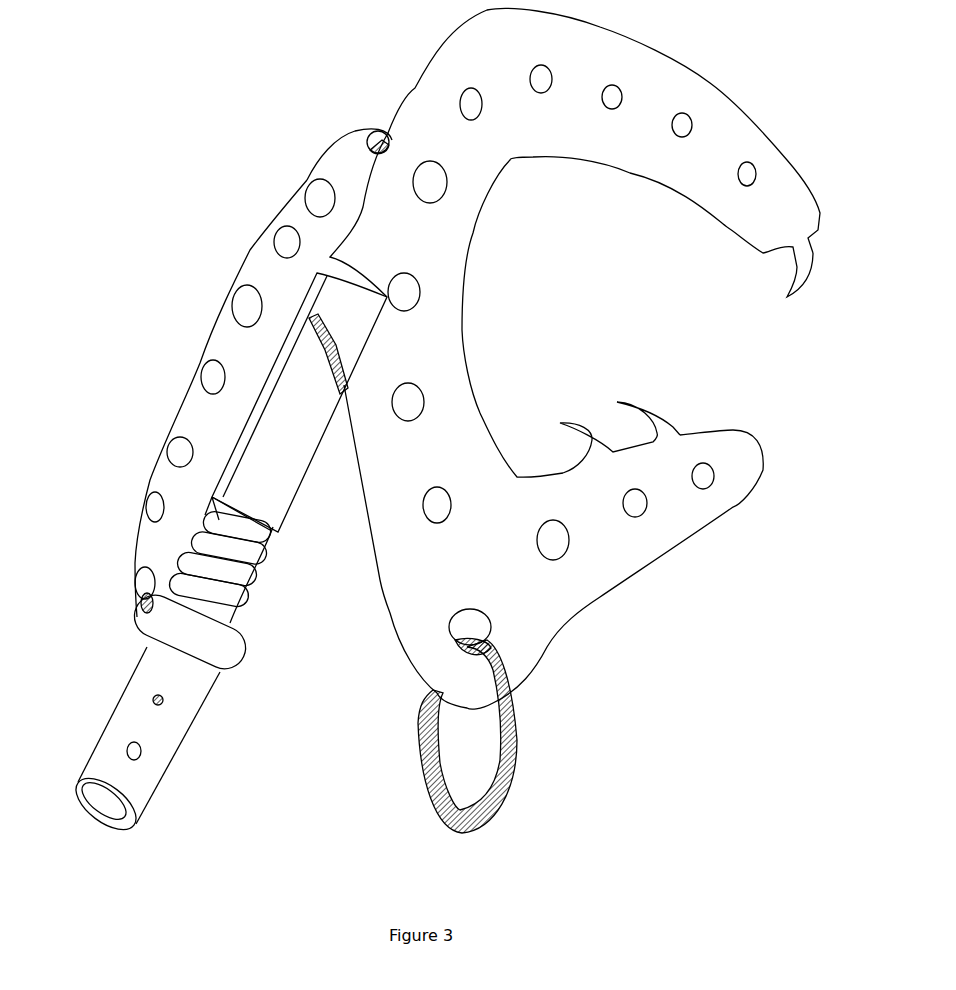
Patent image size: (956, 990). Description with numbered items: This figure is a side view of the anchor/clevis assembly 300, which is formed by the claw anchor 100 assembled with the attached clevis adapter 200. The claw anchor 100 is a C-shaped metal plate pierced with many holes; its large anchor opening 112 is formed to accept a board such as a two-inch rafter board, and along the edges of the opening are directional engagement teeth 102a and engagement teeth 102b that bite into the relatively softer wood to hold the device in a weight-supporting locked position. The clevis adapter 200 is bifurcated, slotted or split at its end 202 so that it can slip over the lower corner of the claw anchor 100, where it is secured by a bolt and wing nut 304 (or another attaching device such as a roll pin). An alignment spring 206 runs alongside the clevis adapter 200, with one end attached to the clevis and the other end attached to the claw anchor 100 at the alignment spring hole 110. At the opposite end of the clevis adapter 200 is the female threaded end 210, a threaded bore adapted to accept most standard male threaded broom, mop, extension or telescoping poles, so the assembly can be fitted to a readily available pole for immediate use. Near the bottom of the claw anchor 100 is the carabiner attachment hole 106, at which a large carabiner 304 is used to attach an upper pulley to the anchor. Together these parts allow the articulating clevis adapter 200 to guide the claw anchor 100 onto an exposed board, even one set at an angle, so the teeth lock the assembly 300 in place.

The claw anchor 100 is at (571, 358).
The engagement teeth 102a is at (654, 402).
The engagement teeth 102b is at (792, 265).
The carabiner attachment hole 106 is at (623, 637).
The alignment spring hole 110 is at (384, 138).
The anchor opening 112 is at (612, 366).
The clevis adapter 200 is at (221, 497).
The bifurcated or slotted end 202 is at (346, 296).
The alignment spring 206 is at (198, 331).
The female threaded end 210 is at (63, 843).
The anchor/clevis assembly 300 is at (350, 795).
The bolt and wing nut / carabiner 304 is at (343, 382).